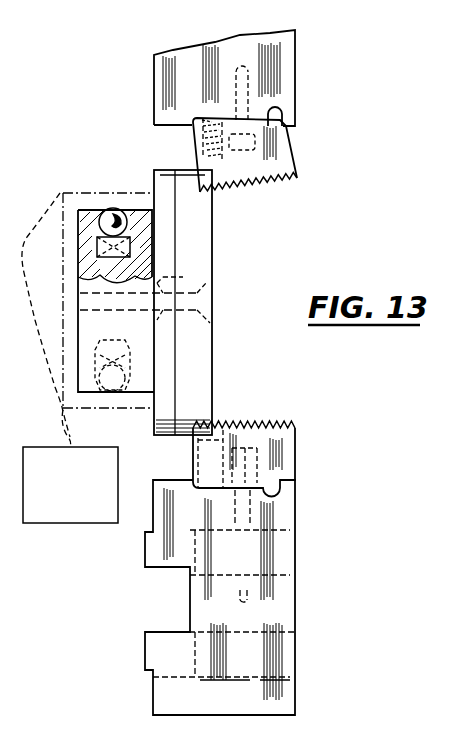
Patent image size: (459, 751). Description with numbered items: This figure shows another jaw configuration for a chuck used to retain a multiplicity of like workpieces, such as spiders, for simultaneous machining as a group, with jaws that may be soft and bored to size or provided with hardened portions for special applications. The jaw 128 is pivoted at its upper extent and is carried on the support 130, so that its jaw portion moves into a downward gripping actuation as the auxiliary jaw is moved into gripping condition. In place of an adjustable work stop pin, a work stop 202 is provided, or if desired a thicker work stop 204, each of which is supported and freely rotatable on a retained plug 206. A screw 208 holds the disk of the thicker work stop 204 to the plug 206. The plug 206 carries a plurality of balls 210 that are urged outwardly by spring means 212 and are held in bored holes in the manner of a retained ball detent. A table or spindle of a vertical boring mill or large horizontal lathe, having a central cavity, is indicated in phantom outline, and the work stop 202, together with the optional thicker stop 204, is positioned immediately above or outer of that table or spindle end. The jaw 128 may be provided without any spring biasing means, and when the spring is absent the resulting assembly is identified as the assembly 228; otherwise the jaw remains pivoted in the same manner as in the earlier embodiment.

The jaw 128 is at (297, 178).
The support 130 is at (277, 518).
The work stop 202 is at (163, 357).
The thicker work stop 204 is at (200, 387).
The retained plug 206 is at (138, 373).
The screw 208 is at (203, 284).
The balls 210 is at (108, 209).
The spring means 212 is at (77, 257).
The jaw assembly without spring means 228 is at (285, 437).